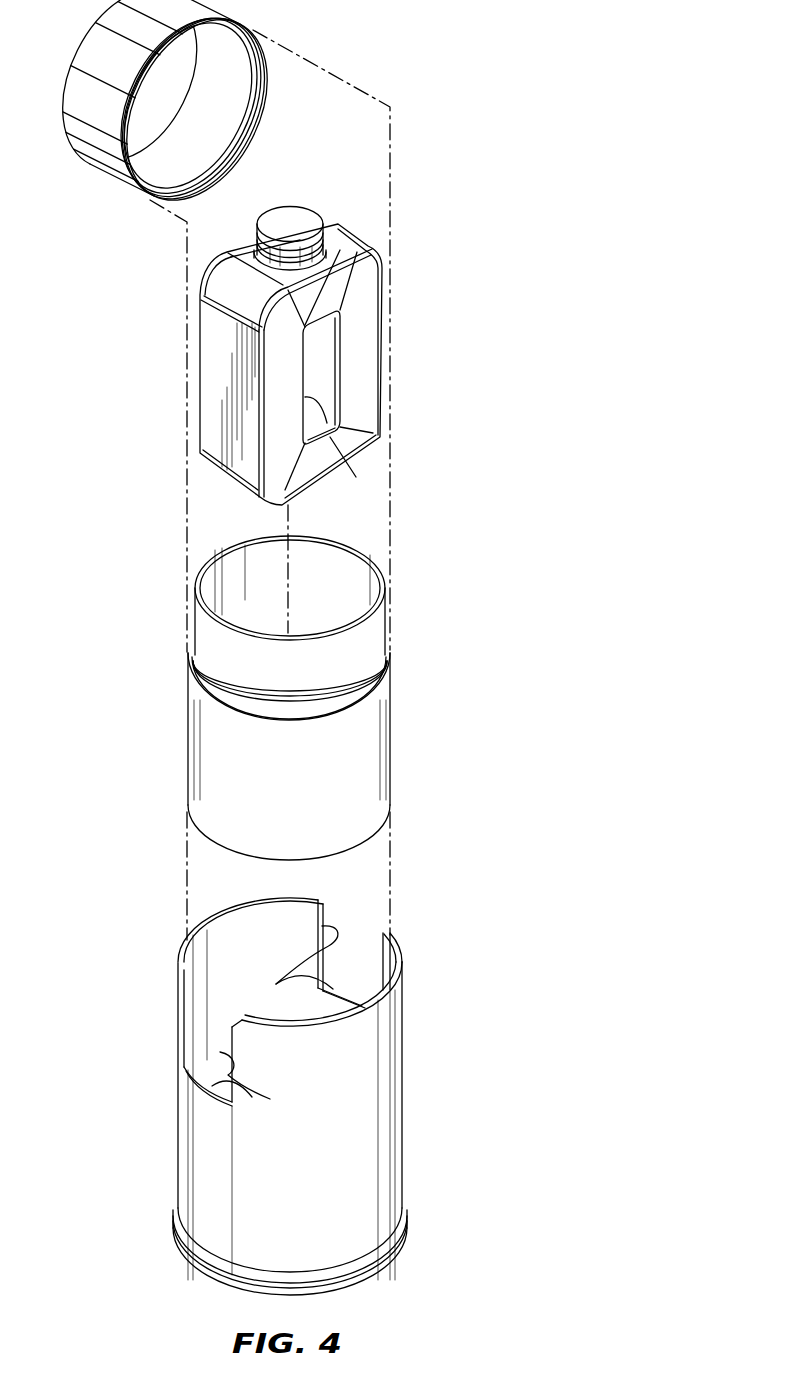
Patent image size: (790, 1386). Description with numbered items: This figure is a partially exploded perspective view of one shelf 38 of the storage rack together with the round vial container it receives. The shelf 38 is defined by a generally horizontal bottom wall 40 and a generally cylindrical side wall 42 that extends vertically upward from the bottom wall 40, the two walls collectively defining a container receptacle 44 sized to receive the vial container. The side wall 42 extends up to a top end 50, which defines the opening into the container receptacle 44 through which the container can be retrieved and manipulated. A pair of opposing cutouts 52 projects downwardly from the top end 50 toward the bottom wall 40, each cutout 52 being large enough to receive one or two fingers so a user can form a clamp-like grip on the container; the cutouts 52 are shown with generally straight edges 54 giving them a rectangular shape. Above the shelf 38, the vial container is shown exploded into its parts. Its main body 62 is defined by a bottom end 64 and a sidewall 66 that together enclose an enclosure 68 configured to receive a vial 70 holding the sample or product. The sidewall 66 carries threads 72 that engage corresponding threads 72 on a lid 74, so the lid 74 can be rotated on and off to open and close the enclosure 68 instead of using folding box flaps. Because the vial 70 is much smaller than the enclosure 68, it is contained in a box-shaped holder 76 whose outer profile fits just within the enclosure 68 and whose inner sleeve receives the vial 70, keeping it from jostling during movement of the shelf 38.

The shelf 38 is at (300, 1077).
The bottom wall 40 is at (390, 1268).
The side wall 42 is at (288, 1234).
The container receptacle 44 is at (291, 922).
The top end 50 is at (403, 949).
The cutout 52 is at (368, 932).
The straight edges 54 is at (277, 1100).
The main body 62 is at (299, 691).
The bottom end 64 is at (227, 848).
The sidewall 66 is at (281, 804).
The enclosure 68 is at (344, 576).
The vial 70 is at (290, 217).
The threads 72 is at (257, 108).
The lid 74 is at (115, 69).
The holder 76 is at (364, 376).